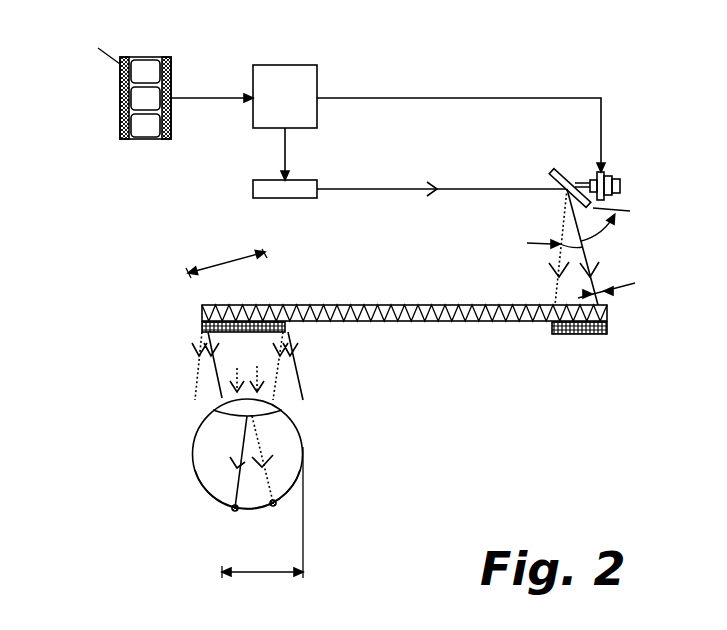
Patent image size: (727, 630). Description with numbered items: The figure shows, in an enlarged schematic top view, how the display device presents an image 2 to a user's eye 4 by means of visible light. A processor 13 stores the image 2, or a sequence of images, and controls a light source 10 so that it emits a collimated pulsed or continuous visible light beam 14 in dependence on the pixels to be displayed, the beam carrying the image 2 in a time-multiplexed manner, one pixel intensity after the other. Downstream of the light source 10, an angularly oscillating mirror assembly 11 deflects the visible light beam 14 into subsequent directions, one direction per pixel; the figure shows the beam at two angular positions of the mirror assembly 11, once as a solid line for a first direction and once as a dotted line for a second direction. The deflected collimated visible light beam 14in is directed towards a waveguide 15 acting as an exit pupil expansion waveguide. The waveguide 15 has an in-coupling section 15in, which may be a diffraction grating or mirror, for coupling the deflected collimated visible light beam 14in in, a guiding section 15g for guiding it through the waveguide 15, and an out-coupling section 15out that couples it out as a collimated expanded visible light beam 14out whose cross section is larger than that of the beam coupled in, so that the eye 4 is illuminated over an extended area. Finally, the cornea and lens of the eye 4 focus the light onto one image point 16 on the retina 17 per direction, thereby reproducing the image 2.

The image 2 is at (142, 128).
The processor 13 is at (297, 65).
The light source 10 is at (297, 199).
The visible light beam 14 is at (378, 188).
The mirror assembly 11 is at (628, 175).
The deflected collimated visible light beam 14in is at (585, 250).
The waveguide 15 is at (557, 362).
The guiding section 15g is at (430, 304).
The in-coupling section 15in is at (607, 327).
The out-coupling section 15out is at (202, 327).
The collimated expanded visible light beam 14out is at (290, 378).
The eye 4 is at (203, 440).
The retina 17 is at (202, 485).
The image point 16 is at (270, 505).